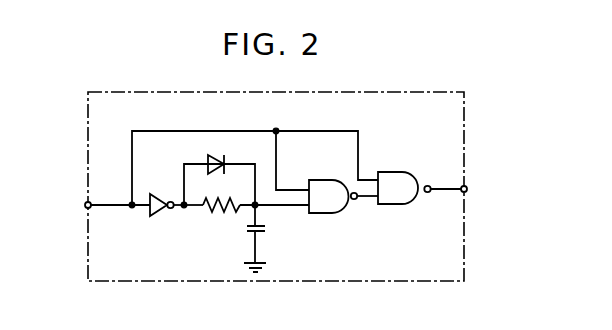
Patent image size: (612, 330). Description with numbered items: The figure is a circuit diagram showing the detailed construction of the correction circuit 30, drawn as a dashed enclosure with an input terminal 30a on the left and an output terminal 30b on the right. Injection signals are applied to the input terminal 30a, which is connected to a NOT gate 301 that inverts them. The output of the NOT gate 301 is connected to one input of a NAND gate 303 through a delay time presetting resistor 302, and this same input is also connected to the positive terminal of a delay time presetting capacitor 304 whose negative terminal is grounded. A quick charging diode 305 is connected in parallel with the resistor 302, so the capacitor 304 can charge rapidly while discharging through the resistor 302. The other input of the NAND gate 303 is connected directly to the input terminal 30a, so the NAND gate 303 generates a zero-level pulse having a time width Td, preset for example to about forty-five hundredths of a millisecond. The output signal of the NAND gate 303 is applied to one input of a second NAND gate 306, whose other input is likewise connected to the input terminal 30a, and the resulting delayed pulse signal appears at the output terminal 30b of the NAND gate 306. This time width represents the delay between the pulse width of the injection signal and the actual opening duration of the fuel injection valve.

The correction circuit 30 is at (368, 92).
The input terminal 30a is at (84, 203).
The output terminal 30b is at (469, 190).
The NOT gate 301 is at (160, 214).
The delay time presetting resistor 302 is at (222, 213).
The NAND gate 303 is at (342, 213).
The delay time presetting capacitor 304 is at (266, 229).
The quick charging diode 305 is at (214, 154).
The NAND gate 306 is at (390, 172).